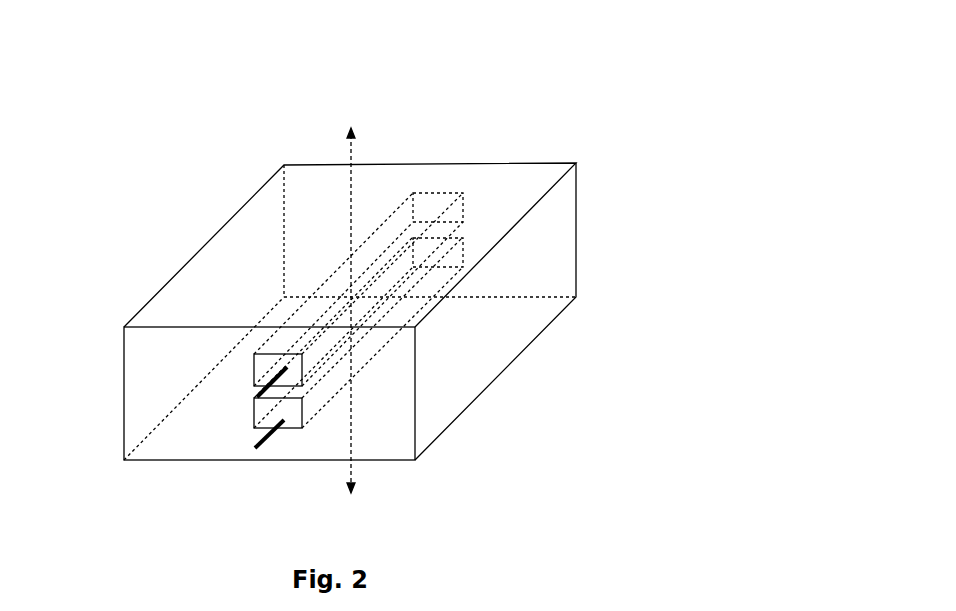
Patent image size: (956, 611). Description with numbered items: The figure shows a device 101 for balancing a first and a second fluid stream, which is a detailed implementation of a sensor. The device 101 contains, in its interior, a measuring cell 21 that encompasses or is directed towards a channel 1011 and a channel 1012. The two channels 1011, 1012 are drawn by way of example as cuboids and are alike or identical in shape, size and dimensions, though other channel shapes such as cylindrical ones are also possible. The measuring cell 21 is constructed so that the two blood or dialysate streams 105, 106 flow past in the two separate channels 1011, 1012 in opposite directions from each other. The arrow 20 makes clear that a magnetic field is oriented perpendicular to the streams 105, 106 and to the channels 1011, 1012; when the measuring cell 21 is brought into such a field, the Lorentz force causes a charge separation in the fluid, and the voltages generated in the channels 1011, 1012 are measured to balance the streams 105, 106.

The device 101 is at (137, 313).
The arrow 20 is at (350, 188).
The measuring cell 21 is at (240, 270).
The first stream 105 is at (253, 377).
The second stream 106 is at (255, 450).
The channel 1011 is at (427, 210).
The channel 1012 is at (440, 255).